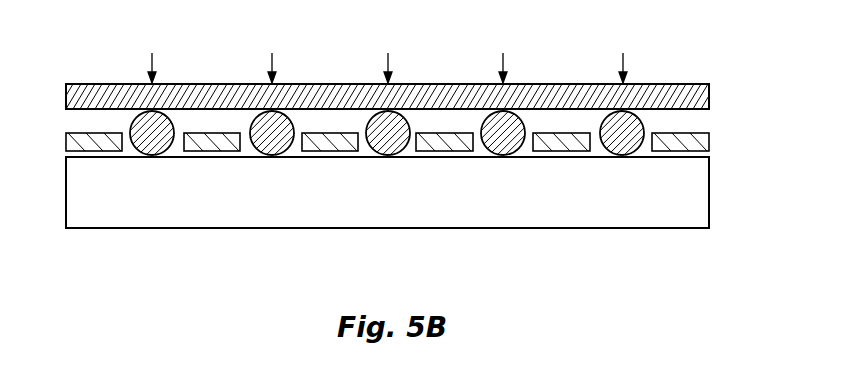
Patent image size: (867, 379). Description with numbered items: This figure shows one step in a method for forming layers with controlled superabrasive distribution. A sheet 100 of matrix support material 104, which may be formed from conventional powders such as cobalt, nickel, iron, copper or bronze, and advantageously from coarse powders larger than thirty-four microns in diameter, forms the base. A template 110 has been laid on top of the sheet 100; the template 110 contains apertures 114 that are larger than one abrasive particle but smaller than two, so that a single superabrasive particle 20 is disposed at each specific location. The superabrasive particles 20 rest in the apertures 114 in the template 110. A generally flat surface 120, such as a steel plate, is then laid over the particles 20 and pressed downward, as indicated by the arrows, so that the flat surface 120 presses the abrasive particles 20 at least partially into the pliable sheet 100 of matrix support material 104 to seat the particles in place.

The superabrasive particles 20 is at (142, 153).
The sheet 100 is at (430, 192).
The matrix support material 104 is at (368, 214).
The template 110 is at (436, 129).
The apertures 114 is at (648, 137).
The flat surface 120 is at (92, 84).